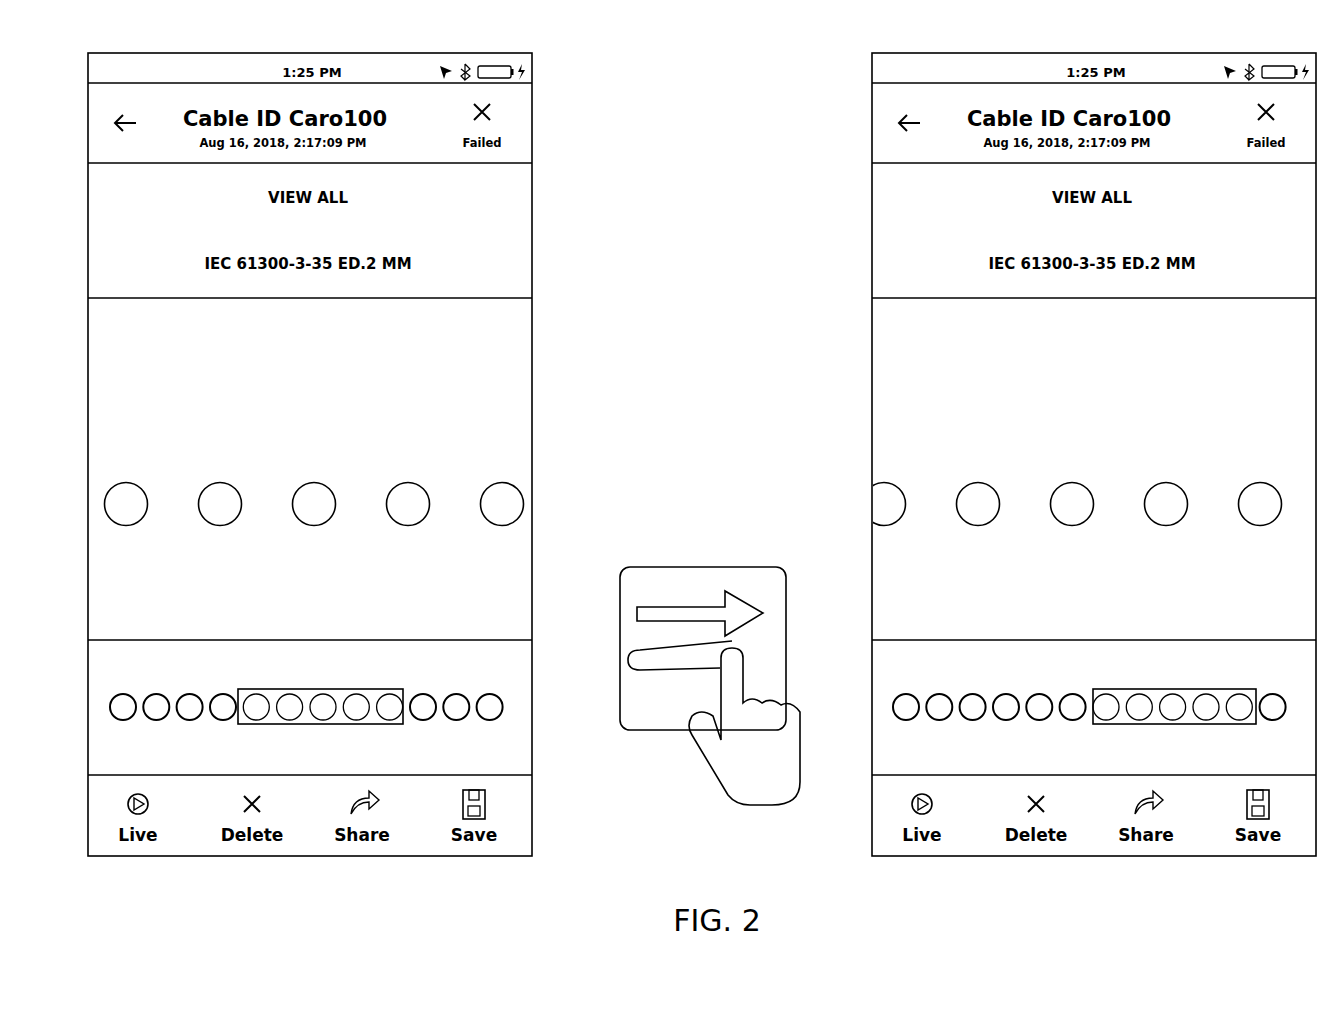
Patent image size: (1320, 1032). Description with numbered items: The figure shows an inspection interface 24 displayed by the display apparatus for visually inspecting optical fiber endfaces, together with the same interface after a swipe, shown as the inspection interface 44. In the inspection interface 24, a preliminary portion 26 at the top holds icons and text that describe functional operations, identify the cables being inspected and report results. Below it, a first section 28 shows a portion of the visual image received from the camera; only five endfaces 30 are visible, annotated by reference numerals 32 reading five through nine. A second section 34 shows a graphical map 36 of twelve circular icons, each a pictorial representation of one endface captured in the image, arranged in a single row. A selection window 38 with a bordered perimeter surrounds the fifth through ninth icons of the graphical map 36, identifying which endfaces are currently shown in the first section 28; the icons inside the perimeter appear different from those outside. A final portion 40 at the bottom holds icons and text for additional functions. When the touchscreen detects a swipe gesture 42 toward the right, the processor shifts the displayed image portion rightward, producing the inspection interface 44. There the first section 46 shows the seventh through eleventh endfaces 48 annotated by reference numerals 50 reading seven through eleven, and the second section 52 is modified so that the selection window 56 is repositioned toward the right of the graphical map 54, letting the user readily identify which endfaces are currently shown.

The inspection interface 24 is at (415, 53).
The preliminary portion 26 is at (543, 53).
The first section 28 is at (495, 377).
The endfaces 30 is at (543, 480).
The reference numerals 32 is at (516, 548).
The second section 34 is at (513, 655).
The graphical map 36 is at (543, 683).
The selection window 38 is at (391, 724).
The final portion 40 is at (543, 775).
The swipe gesture 42 is at (706, 567).
The inspection interface 44 is at (1115, 53).
The first section 46 is at (897, 378).
The endfaces 48 is at (858, 480).
The reference numerals 50 is at (897, 550).
The second section 52 is at (885, 655).
The graphical map 54 is at (858, 683).
The selection window 56 is at (1113, 723).